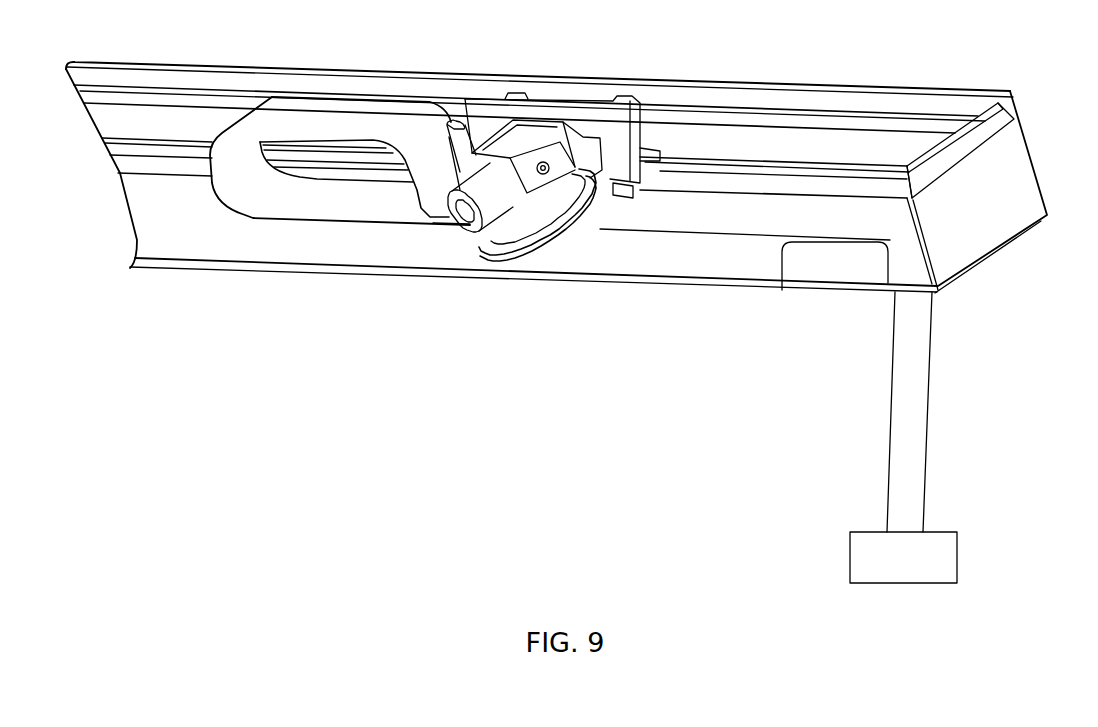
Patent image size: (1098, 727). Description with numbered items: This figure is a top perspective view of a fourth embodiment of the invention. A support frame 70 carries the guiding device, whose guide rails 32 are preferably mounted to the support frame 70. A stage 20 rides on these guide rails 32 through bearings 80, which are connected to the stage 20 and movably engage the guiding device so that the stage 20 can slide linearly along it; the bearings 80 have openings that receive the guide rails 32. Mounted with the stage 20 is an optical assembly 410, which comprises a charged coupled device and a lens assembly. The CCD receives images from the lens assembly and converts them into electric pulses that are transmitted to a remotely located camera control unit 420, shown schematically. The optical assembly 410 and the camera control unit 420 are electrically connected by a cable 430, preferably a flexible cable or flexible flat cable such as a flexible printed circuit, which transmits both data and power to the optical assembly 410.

The stage 20 is at (590, 137).
The guide rail 32 is at (875, 128).
The support frame 70 is at (340, 240).
The bearing 80 is at (634, 98).
The optical assembly 410 is at (500, 245).
The camera control unit 420 is at (957, 545).
The cable 430 is at (782, 290).